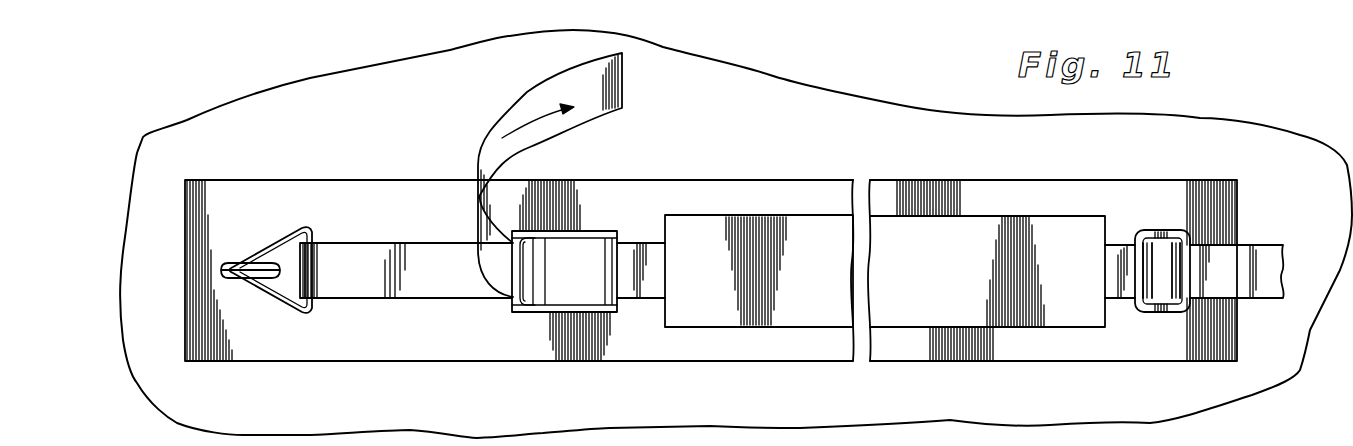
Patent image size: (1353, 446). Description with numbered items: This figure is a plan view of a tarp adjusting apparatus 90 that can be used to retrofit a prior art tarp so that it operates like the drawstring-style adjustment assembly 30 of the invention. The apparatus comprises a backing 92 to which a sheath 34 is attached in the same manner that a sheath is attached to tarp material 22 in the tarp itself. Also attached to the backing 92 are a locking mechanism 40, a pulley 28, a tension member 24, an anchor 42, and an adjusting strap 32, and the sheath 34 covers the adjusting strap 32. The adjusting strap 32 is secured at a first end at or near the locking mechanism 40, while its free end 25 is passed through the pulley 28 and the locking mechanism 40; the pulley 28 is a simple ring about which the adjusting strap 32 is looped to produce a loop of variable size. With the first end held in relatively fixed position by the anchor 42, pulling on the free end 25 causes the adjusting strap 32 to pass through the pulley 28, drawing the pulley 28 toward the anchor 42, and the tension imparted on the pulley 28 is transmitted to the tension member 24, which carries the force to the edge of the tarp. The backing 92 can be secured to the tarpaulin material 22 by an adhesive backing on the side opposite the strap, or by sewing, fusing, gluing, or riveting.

The tarp material 22 is at (376, 138).
The tension member 24 is at (1258, 245).
The free end of the adjusting strap 25 is at (527, 92).
The pulley 28 is at (1172, 316).
The adjustment assembly 30 is at (728, 327).
The adjusting strap 32 is at (1116, 260).
The sheath 34 is at (950, 285).
The locking mechanism 40 is at (598, 214).
The anchor 42 is at (270, 250).
The tarp adjusting apparatus 90 is at (505, 360).
The backing 92 is at (730, 198).